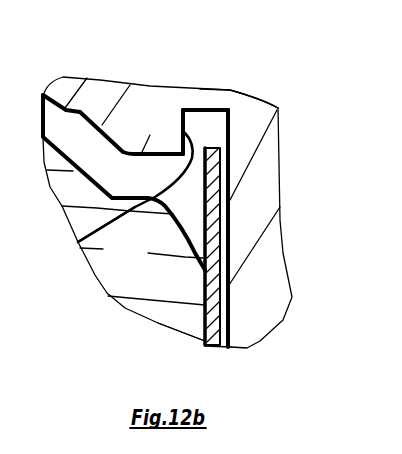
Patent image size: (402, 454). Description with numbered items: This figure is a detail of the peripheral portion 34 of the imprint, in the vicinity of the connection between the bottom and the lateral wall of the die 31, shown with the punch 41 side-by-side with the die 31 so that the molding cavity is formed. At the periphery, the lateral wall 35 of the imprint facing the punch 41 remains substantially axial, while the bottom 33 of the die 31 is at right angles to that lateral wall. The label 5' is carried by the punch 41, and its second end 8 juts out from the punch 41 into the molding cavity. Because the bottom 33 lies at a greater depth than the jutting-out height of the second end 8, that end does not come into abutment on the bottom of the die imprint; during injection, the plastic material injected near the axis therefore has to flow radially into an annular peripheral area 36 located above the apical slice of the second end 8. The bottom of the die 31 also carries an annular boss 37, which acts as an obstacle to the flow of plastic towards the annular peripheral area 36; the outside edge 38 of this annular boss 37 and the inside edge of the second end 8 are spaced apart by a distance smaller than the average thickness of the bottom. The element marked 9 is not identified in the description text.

The die 31 is at (149, 131).
The bottom of the die imprint 33 is at (77, 110).
The peripheral portion of the imprint 34 is at (231, 84).
The lateral wall of the imprint 35 is at (233, 118).
The annular peripheral area 36 is at (210, 130).
The annular boss 37 is at (157, 137).
The outside edge of the annular boss 38 is at (78, 242).
The punch 41 is at (139, 256).
The second end of the label 8 is at (218, 193).
The slot 9 is at (218, 157).
The label 5' is at (156, 347).